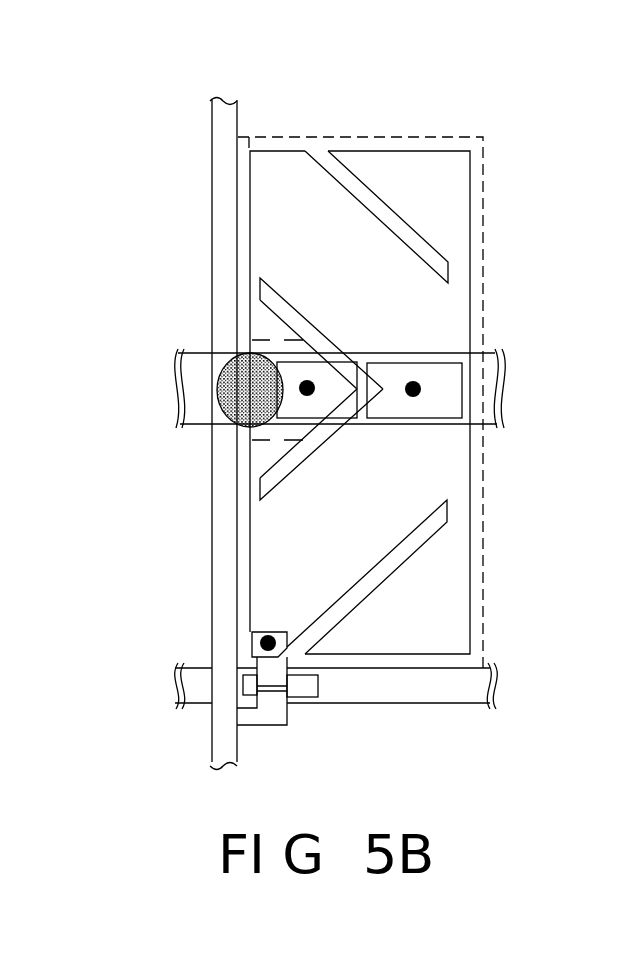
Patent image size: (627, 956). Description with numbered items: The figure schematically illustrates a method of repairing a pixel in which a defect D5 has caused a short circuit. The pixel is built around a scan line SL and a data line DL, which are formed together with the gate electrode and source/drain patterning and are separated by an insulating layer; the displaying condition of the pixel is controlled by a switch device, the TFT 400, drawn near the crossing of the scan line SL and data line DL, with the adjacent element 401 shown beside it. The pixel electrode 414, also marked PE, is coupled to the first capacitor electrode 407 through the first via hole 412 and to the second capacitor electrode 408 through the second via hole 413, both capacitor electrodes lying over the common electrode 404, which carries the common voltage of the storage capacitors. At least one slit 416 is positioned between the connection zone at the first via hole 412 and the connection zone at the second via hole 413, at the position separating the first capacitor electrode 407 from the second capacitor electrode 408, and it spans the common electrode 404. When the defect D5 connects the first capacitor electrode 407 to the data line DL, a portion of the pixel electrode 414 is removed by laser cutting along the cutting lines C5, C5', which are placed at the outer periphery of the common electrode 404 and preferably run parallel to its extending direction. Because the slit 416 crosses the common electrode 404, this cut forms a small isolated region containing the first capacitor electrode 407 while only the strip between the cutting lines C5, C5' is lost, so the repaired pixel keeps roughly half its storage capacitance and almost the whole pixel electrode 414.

The data line DL is at (231, 97).
The scan line SL is at (185, 685).
The pixel electrode PE is at (266, 146).
The pixel electrode 414 is at (462, 193).
The slit 416 is at (262, 290).
The cutting line C5 is at (317, 446).
The cutting line C5' is at (316, 309).
The common electrode 404 is at (497, 411).
The first capacitor electrode 407 is at (290, 414).
The first via hole 412 is at (303, 400).
The defect D5 is at (232, 377).
The second capacitor electrode 408 is at (452, 375).
The second via hole 413 is at (418, 382).
The TFT 400 is at (290, 691).
The source electrode 401 is at (312, 688).